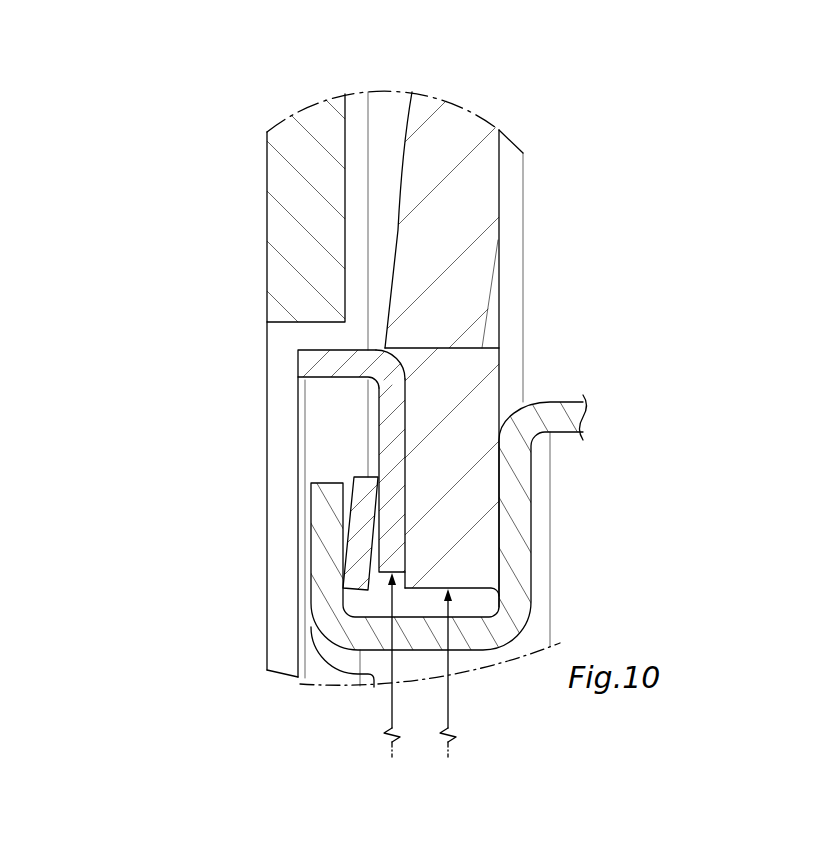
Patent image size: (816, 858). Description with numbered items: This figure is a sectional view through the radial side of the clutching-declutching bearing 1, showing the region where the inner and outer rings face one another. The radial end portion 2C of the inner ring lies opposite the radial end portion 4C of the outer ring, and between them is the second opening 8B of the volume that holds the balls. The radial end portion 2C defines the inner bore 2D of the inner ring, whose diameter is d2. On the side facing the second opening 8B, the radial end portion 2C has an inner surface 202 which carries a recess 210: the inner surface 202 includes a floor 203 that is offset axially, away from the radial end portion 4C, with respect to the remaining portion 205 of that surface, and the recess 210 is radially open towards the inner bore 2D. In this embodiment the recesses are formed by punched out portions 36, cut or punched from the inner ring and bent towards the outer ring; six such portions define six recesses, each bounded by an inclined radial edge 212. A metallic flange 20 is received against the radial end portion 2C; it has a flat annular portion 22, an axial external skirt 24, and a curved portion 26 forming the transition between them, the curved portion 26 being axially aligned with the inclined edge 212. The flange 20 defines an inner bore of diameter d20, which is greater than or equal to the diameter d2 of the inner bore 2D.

The bearing 1 is at (506, 272).
The radial end portion of the outer ring 4C is at (302, 169).
The second opening 8B is at (384, 190).
The punched out portion 36 is at (472, 321).
The inner surface 202 is at (231, 340).
The remaining portion of the inner surface 205 is at (395, 268).
The floor 203 is at (395, 405).
The recess 210 is at (377, 345).
The radial edge of the recess 212 is at (401, 357).
The metallic flange 20 is at (360, 470).
The axial external skirt 24 is at (315, 362).
The curved portion 26 is at (388, 380).
The flat annular portion 22 is at (367, 493).
The radial end portion of the inner ring 2C is at (440, 522).
The inner bore 2D is at (463, 661).
The diameter of the flange inner bore d20 is at (387, 665).
The diameter of the inner bore d2 is at (443, 673).